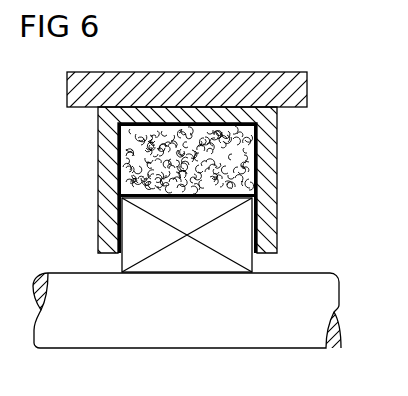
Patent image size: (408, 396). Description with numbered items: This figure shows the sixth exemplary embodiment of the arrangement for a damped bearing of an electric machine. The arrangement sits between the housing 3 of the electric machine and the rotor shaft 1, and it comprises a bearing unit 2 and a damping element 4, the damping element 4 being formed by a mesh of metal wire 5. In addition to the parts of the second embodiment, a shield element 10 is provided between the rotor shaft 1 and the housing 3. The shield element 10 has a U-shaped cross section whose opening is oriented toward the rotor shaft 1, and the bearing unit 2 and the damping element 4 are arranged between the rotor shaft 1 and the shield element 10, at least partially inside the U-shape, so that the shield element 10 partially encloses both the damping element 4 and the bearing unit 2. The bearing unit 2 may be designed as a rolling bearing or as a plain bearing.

The rotor shaft 1 is at (252, 343).
The bearing unit 2 is at (230, 251).
The housing 3 is at (253, 77).
The damping element 4 is at (120, 153).
The mesh of metal wire 5 is at (232, 155).
The shield element 10 is at (105, 235).